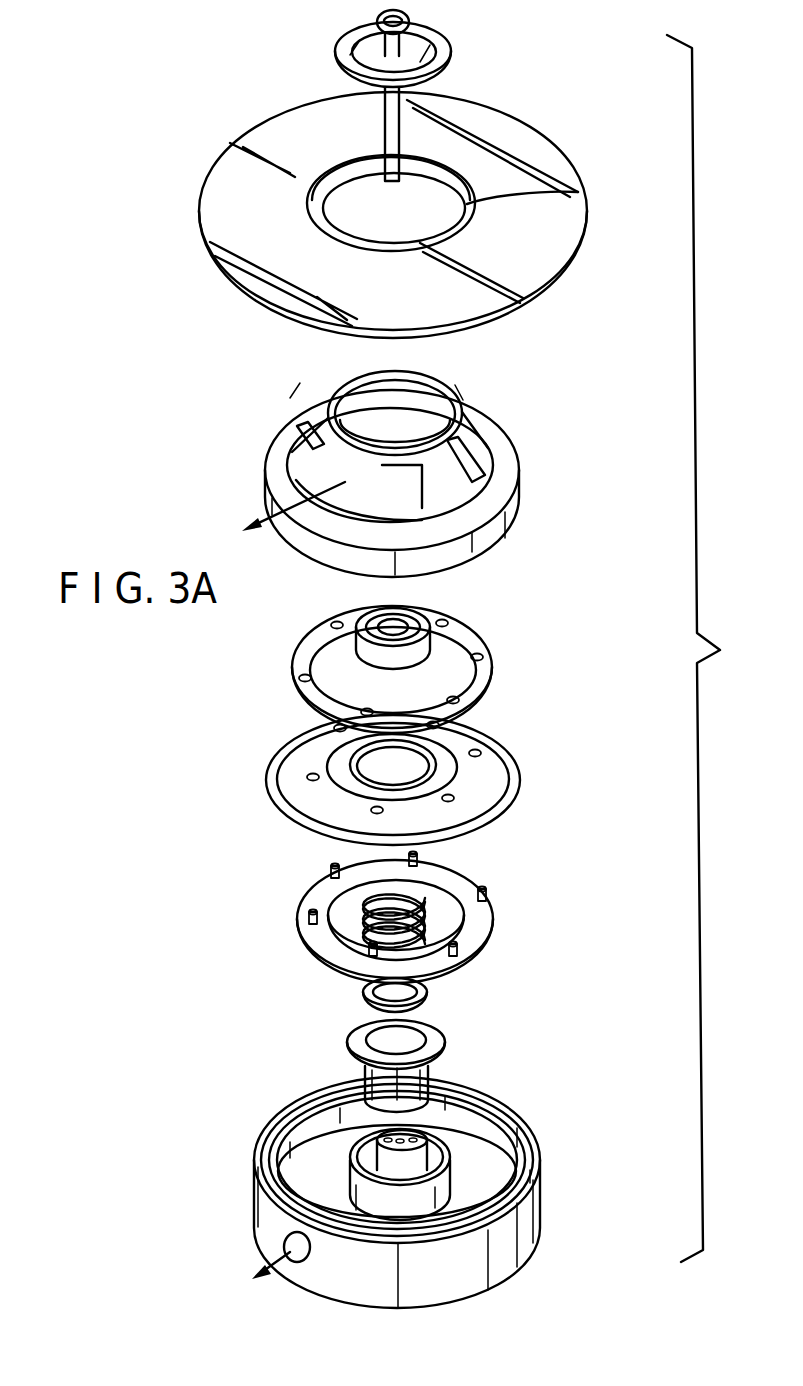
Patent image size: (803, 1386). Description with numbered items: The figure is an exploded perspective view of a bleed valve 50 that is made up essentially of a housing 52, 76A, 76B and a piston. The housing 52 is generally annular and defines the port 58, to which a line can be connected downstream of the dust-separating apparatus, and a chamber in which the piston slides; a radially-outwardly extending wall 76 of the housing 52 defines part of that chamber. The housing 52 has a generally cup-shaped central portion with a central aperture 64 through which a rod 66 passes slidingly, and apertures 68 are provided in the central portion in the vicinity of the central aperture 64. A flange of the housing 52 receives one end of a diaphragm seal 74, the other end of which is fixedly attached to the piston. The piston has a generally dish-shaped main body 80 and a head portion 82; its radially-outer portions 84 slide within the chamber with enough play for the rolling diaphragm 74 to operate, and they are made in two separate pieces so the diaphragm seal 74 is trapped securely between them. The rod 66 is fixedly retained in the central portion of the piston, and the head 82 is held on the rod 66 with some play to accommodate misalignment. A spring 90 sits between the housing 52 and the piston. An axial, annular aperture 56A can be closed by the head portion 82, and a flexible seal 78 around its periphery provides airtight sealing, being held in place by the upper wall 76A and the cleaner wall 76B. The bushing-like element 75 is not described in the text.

The bleed valve 50 is at (712, 648).
The head portion 82 is at (453, 52).
The rod 66 is at (385, 123).
The cleaner wall 76B is at (424, 215).
The flexible seal 78 is at (578, 192).
The upper wall 76A is at (416, 474).
The axial annular aperture 56A is at (312, 440).
The main body 80 is at (473, 644).
The diaphragm seal 74 is at (500, 760).
The radially-outer portions 84 is at (485, 912).
The spring 90 is at (340, 931).
The bushing 75 is at (443, 1033).
The apertures 68 is at (418, 1125).
The central aperture 64 is at (450, 1163).
The housing 52 is at (560, 1164).
The port 58 is at (262, 1234).
The radially-outwardly extending wall 76 is at (419, 1174).